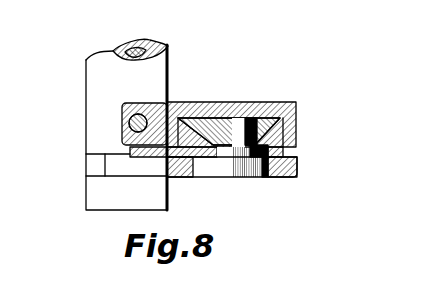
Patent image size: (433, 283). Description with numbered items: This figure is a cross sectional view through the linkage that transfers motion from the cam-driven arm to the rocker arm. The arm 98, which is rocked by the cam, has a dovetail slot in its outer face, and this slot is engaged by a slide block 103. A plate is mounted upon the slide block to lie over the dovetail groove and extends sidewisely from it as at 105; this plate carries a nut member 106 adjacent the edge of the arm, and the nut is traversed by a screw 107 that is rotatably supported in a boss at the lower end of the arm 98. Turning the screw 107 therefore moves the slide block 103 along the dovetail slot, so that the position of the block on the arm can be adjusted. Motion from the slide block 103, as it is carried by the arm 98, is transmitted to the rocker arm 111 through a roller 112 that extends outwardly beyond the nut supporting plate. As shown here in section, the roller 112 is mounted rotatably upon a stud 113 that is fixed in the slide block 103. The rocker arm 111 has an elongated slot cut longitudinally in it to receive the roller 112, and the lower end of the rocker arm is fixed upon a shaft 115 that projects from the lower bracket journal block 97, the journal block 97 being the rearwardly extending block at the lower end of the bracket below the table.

The journal block 97 is at (168, 45).
The shaft 115 is at (118, 51).
The nut member 106 is at (169, 101).
The arm 98 is at (227, 102).
The slide block 103 is at (270, 113).
The stud 113 is at (233, 132).
The screw 107 is at (122, 123).
The sidewise extension of plate 105 is at (130, 155).
The rocker arm 111 is at (297, 167).
The roller 112 is at (222, 177).